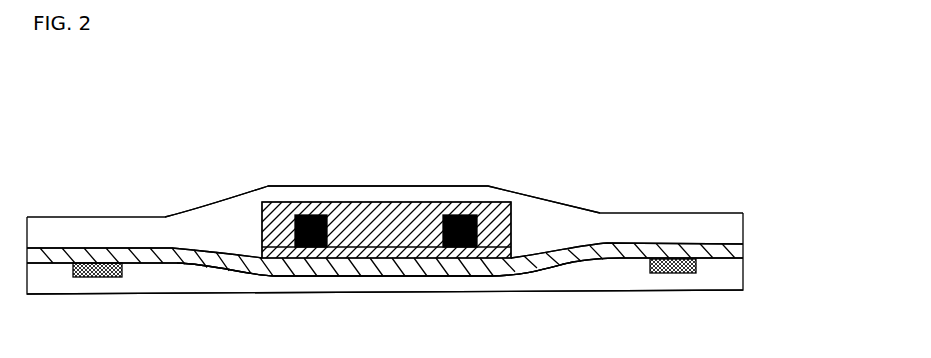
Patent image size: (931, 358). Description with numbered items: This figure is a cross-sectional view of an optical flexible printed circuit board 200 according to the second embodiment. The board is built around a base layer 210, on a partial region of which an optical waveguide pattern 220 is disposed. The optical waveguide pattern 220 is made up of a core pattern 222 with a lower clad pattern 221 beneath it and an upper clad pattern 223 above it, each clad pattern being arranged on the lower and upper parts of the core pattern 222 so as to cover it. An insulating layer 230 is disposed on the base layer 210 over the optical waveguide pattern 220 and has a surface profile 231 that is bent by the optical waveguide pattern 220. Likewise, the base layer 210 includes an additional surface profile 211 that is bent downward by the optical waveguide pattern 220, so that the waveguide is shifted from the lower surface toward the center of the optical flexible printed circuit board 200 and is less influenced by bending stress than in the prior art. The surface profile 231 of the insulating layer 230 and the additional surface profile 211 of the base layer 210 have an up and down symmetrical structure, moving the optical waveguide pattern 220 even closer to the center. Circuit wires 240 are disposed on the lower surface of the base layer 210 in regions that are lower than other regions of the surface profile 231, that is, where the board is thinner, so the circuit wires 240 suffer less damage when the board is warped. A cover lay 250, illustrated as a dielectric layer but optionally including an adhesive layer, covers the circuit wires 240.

The optical flexible printed circuit board 200 is at (75, 76).
The base layer 210 is at (744, 249).
The additional surface profile 211 is at (372, 278).
The optical waveguide pattern 220 is at (402, 126).
The lower clad pattern 221 is at (283, 243).
The core pattern 222 is at (313, 213).
The upper clad pattern 223 is at (377, 220).
The insulating layer 230 is at (744, 219).
The surface profile 231 is at (530, 193).
The circuit wire 240 is at (673, 277).
The cover lay 250 is at (744, 272).